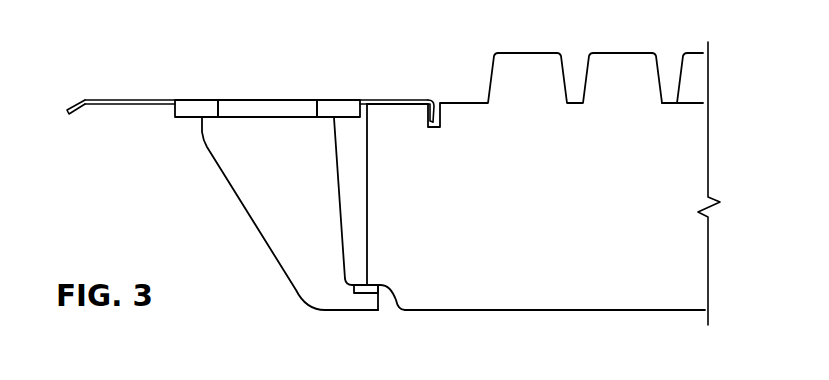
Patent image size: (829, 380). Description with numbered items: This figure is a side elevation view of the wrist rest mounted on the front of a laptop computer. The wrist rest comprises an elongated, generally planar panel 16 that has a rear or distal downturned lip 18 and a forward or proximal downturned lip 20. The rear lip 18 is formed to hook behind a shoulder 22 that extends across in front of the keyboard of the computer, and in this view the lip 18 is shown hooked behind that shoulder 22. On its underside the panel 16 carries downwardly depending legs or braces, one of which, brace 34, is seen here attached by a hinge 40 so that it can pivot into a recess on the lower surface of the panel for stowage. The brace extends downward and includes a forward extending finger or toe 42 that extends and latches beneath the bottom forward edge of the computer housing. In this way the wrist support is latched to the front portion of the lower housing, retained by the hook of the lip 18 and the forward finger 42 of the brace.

The panel 16 is at (148, 98).
The rear downturned lip 18 is at (448, 125).
The forward downturned lip 20 is at (78, 106).
The shoulder 22 is at (431, 100).
The leg or brace 34 is at (245, 208).
The hinge 40 is at (275, 106).
The finger or toe 42 is at (372, 304).